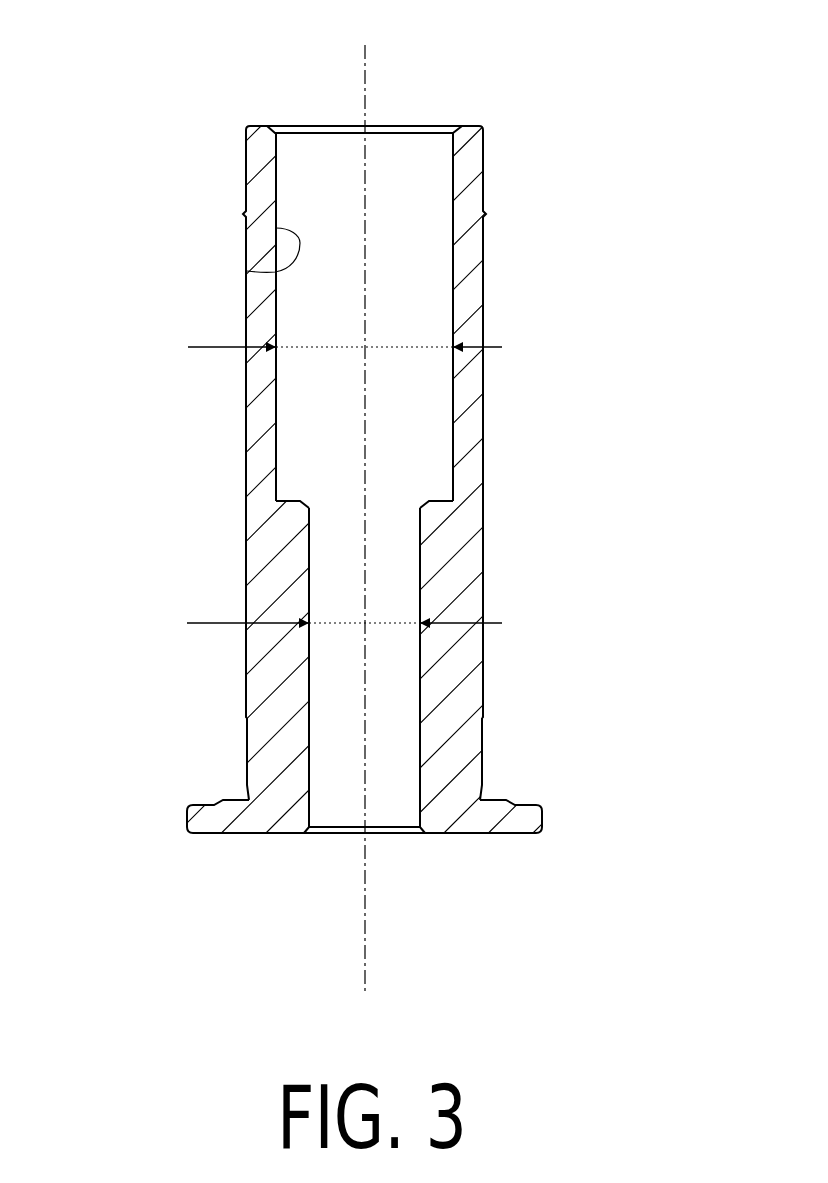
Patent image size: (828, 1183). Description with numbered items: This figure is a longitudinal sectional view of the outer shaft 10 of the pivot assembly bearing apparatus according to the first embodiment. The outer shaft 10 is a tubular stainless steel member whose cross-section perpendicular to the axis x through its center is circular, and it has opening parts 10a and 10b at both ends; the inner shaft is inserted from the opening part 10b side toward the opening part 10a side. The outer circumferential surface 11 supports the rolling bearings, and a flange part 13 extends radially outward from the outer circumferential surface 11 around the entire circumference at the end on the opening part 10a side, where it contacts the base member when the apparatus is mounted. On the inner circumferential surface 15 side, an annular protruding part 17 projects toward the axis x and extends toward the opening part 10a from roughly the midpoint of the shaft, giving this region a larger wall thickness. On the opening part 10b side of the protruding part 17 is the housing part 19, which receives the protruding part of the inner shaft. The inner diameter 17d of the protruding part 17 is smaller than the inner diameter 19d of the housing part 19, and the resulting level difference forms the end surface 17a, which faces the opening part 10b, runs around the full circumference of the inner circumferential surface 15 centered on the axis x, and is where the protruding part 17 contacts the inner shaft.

The outer shaft 10 is at (258, 40).
The opening part 10a is at (422, 833).
The opening part 10b is at (457, 127).
The outer circumferential surface 11 is at (485, 292).
The flange part 13 is at (522, 818).
The inner circumferential surface 15 is at (247, 271).
The protruding part 17 is at (448, 573).
The end surface 17a is at (435, 495).
The inner diameter 17d is at (344, 606).
The housing part 19 is at (463, 432).
The inner diameter 19d is at (345, 330).
The axis x is at (366, 975).